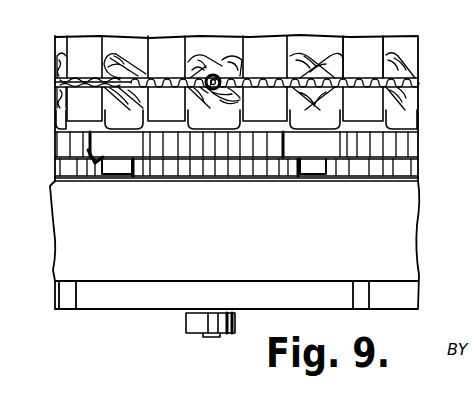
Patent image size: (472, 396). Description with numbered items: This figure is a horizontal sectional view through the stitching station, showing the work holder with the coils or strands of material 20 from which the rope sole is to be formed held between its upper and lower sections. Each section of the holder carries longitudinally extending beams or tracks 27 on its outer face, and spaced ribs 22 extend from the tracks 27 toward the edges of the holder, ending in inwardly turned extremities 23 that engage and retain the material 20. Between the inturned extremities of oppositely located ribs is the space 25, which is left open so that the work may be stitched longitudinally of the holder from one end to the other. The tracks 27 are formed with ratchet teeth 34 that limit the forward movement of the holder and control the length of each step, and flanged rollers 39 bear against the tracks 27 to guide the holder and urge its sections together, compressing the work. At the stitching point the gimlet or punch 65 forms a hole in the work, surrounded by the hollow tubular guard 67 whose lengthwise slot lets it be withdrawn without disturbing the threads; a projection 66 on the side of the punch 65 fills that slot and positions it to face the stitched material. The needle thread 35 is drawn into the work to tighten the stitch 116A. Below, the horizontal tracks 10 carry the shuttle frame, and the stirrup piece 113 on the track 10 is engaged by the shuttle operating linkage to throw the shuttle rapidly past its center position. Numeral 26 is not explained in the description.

The tracks 10 is at (128, 293).
The coils or strands of material 20 is at (305, 82).
The spaced ribs 22 is at (373, 53).
The inwardly turned extremities 23 is at (349, 67).
The space 25 is at (419, 83).
The woven column 26 is at (298, 48).
The beams or tracks 27 is at (108, 140).
The ratchet teeth 34 is at (122, 168).
The thread 35 is at (137, 82).
The flanged rollers 39 is at (208, 145).
The gimlet or punch 65 is at (222, 90).
The projection 66 is at (193, 91).
The hollow tubular guard 67 is at (220, 77).
The stirrup piece 113 is at (195, 321).
The stitch 116A is at (82, 80).